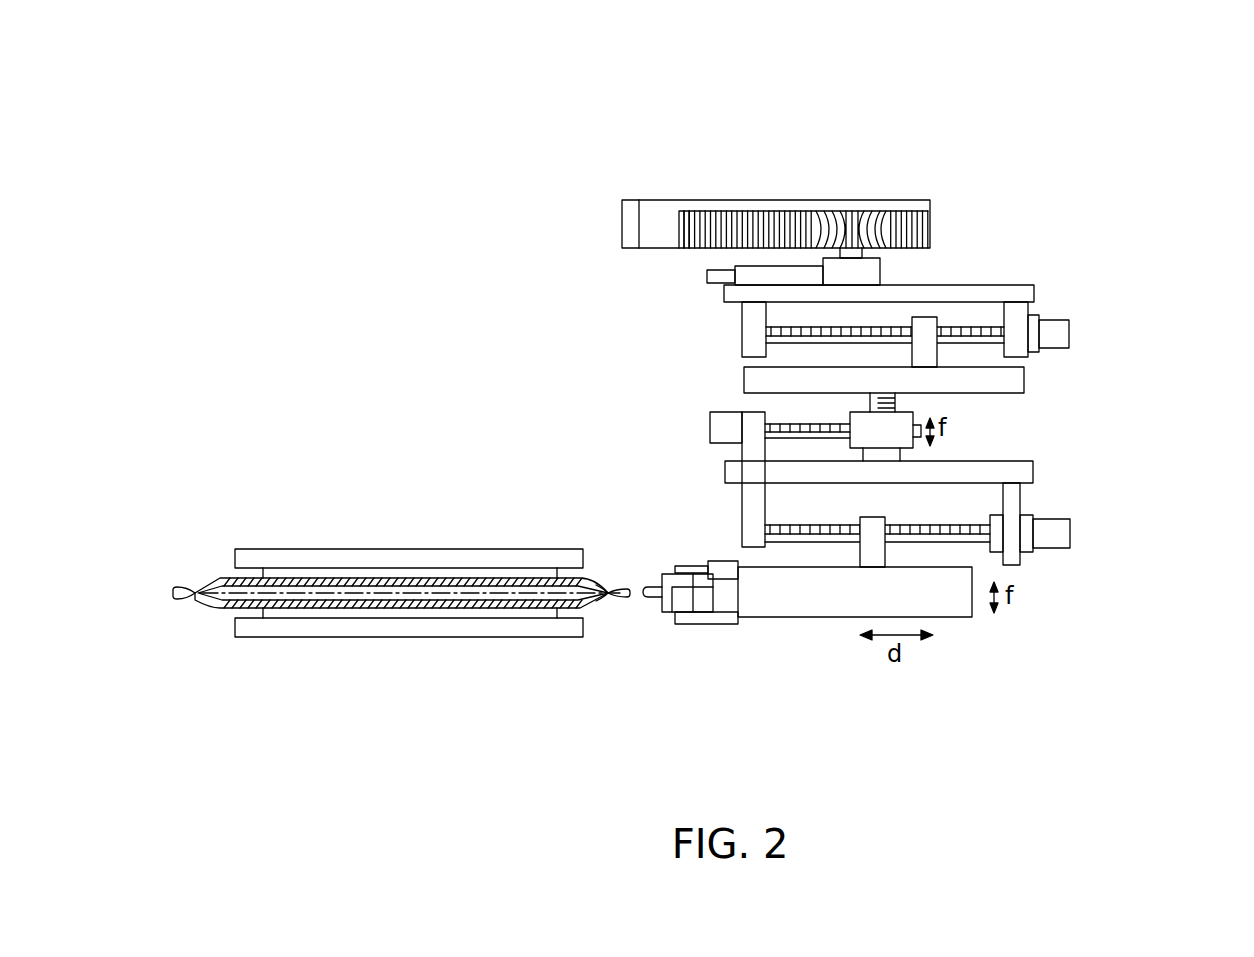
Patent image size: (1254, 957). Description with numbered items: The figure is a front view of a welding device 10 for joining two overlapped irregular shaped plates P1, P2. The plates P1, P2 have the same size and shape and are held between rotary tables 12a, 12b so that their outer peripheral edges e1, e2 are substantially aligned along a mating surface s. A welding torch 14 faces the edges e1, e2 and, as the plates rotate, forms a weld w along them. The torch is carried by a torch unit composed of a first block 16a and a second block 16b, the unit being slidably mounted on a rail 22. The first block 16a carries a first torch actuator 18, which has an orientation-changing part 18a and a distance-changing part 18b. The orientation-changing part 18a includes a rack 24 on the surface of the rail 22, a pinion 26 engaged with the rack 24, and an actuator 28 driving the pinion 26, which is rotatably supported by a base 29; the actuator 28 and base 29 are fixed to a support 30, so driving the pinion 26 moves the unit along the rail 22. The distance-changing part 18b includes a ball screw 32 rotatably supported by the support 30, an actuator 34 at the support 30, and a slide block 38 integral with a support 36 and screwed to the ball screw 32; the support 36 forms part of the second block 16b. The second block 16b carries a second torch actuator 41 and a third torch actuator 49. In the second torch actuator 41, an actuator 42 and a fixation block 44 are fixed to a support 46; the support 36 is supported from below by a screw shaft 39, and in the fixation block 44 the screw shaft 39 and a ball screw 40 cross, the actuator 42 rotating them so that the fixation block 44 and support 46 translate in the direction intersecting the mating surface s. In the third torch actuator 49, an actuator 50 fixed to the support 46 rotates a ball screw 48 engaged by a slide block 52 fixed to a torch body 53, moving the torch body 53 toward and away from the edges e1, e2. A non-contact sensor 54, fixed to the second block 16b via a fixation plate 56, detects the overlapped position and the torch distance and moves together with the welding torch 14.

The welding device 10 is at (670, 93).
The rotary table 12a is at (291, 553).
The rotary table 12b is at (321, 632).
The welding torch 14 is at (655, 598).
The first block 16a is at (1147, 193).
The second block 16b is at (1147, 345).
The first torch actuator 18 is at (515, 193).
The orientation-changing part 18a is at (596, 232).
The distance-changing part 18b is at (690, 325).
The rail 22 is at (768, 205).
The rack 24 is at (700, 232).
The pinion 26 is at (874, 228).
The actuator 28 is at (707, 277).
The base 29 is at (870, 275).
The support 30 is at (1013, 290).
The ball screw 32 is at (793, 328).
The actuator 34 is at (1057, 333).
The support 36 is at (755, 382).
The slide block 38 is at (925, 330).
The screw shaft 39 is at (895, 405).
The ball screw 40 is at (800, 423).
The second torch actuator 41 is at (1007, 432).
The actuator 42 is at (720, 424).
The fixation block 44 is at (905, 441).
The support 46 is at (728, 472).
The ball screw 48 is at (937, 538).
The third torch actuator 49 is at (710, 533).
The actuator 50 is at (1050, 525).
The slide block 52 is at (870, 546).
The torch body 53 is at (835, 600).
The non-contact sensor 54 is at (683, 600).
The fixation plate 56 is at (708, 618).
The irregular shaped plate P1 is at (434, 570).
The irregular shaped plate P2 is at (418, 617).
The mating surface s is at (497, 590).
The outer peripheral edge e1 is at (605, 585).
The outer peripheral edge e2 is at (608, 600).
The weld w is at (624, 590).